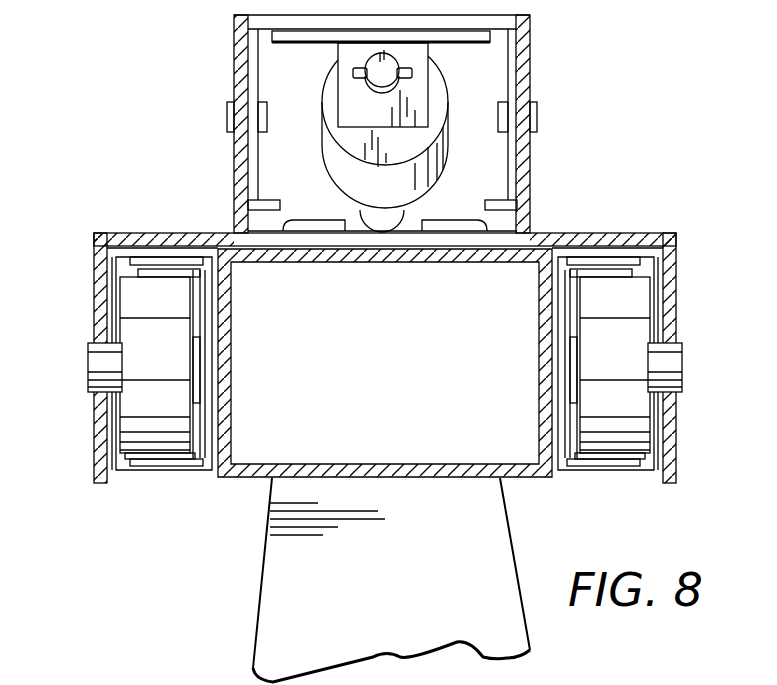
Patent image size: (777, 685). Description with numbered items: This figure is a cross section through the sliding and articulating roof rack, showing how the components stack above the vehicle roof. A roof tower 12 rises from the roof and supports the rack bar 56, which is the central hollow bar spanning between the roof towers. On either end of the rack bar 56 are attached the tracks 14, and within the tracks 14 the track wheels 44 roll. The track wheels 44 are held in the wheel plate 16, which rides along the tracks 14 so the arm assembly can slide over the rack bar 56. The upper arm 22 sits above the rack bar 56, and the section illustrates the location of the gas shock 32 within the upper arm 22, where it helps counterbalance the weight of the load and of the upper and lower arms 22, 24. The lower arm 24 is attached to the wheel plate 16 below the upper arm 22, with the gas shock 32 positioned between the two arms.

The roof tower 12 is at (280, 575).
The track 14 is at (210, 468).
The wheel plate 16 is at (170, 232).
The upper arm 22 is at (255, 181).
The lower arm 24 is at (116, 315).
The gas shock 32 is at (448, 133).
The track wheels 44 is at (147, 428).
The rack bar 56 is at (378, 455).